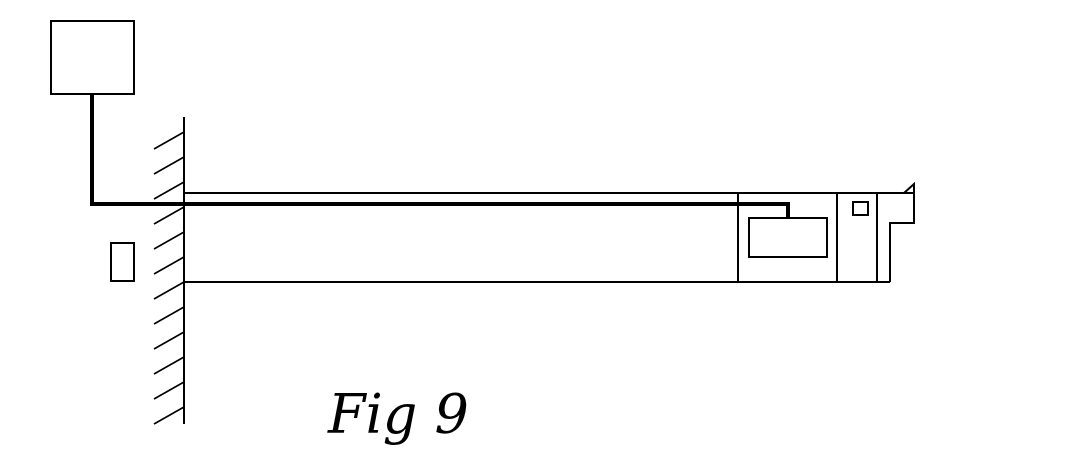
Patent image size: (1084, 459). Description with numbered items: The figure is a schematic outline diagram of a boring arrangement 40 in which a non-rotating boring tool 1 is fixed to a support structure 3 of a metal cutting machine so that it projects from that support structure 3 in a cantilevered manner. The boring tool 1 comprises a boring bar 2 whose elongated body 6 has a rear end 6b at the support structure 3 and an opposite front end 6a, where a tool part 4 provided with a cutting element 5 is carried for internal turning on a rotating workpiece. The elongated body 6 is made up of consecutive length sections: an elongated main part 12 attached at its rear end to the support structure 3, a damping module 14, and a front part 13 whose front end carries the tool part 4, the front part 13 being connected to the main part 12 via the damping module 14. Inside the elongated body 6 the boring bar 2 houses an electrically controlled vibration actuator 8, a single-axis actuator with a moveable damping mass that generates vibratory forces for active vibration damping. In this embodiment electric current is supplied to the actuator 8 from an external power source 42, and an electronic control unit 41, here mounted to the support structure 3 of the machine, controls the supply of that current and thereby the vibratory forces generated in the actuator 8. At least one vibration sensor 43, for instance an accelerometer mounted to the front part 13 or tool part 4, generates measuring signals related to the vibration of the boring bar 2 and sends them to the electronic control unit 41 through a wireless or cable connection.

The boring tool 1 is at (628, 155).
The boring bar 2 is at (522, 182).
The support structure 3 is at (175, 397).
The tool part 4 is at (893, 200).
The cutting element 5 is at (912, 182).
The elongated body 6 is at (500, 284).
The front end of elongated body 6a is at (875, 283).
The rear end of elongated body 6b is at (186, 285).
The vibration actuator 8 is at (800, 248).
The main part 12 is at (297, 278).
The front part 13 is at (858, 275).
The damping module 14 is at (765, 275).
The boring arrangement 40 is at (340, 123).
The electronic control unit 41 is at (121, 277).
The external power source 42 is at (126, 62).
The vibration sensor 43 is at (857, 202).